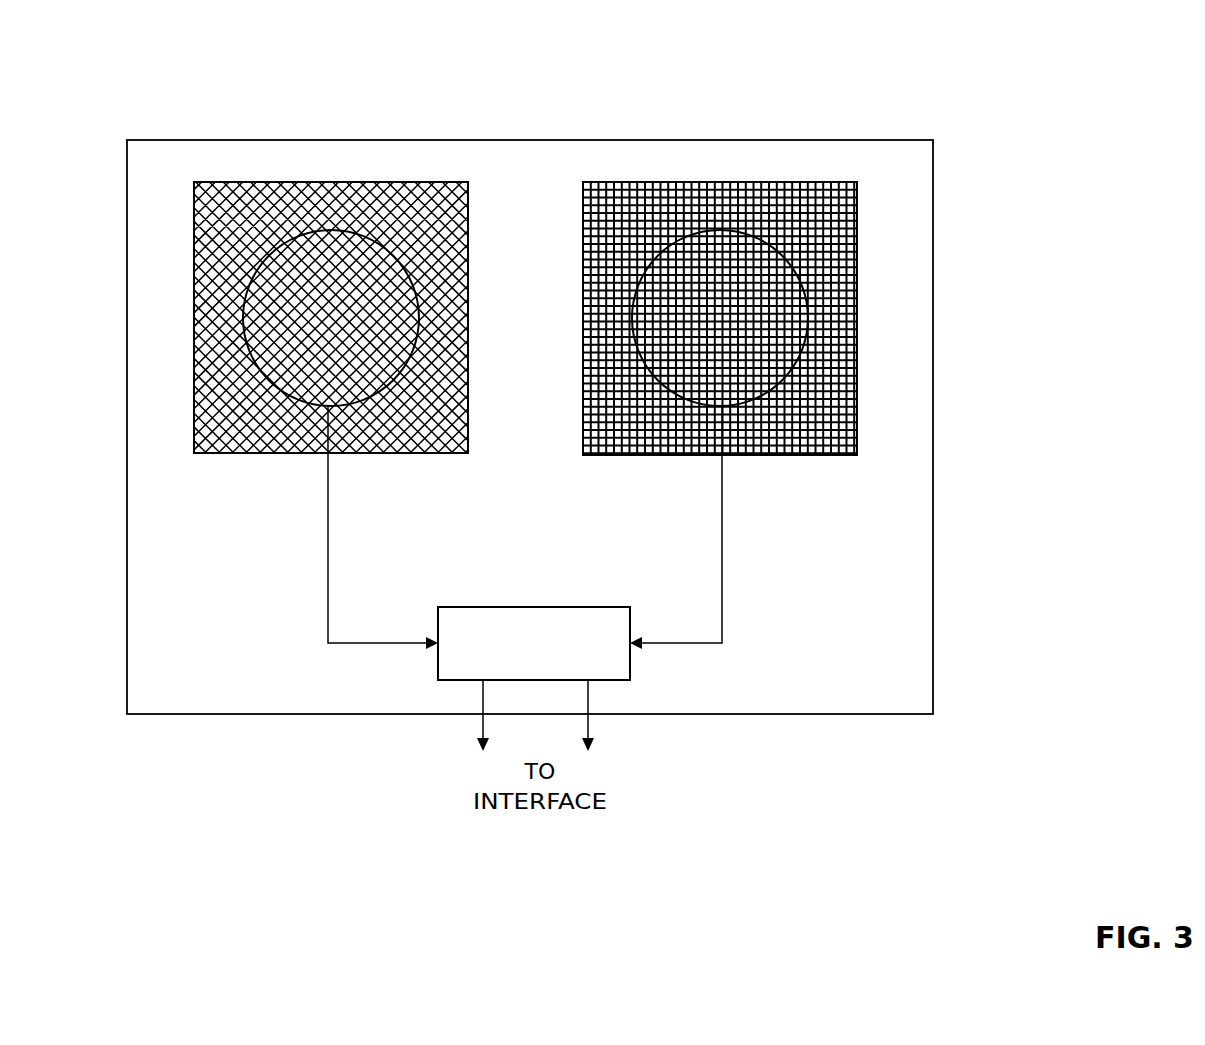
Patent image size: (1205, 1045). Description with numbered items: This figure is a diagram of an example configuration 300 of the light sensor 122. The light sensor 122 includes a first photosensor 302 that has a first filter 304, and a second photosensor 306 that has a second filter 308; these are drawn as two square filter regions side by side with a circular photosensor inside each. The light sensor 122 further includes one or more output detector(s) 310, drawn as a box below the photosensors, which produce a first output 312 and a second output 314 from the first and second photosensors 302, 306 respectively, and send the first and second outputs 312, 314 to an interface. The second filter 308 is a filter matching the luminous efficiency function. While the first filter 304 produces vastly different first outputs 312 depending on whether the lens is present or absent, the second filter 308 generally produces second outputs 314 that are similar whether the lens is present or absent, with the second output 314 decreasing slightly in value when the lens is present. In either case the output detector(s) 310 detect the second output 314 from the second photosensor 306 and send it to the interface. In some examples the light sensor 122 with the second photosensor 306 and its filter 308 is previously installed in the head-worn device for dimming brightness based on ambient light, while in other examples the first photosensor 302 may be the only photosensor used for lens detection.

The example configuration 300 is at (1020, 66).
The light sensor 122 is at (934, 192).
The first photosensor 302 is at (348, 406).
The first filter 304 is at (392, 427).
The second photosensor 306 is at (745, 405).
The second filter 308 is at (797, 425).
The output detector(s) 310 is at (585, 606).
The first output 312 is at (480, 706).
The second output 314 is at (592, 706).